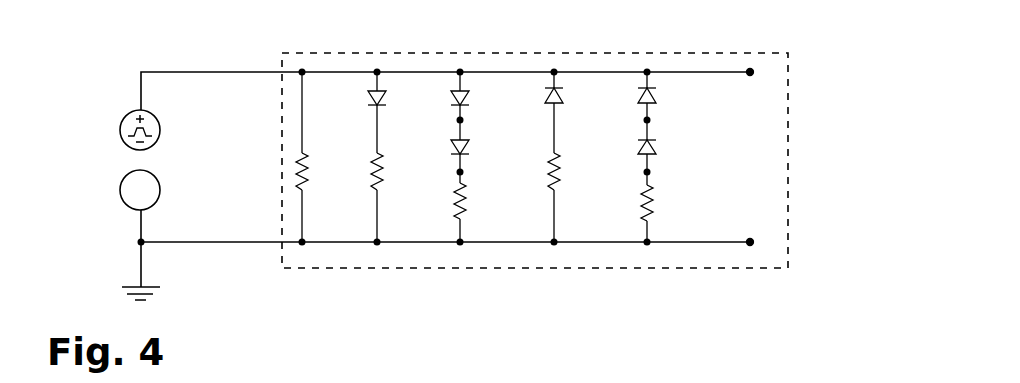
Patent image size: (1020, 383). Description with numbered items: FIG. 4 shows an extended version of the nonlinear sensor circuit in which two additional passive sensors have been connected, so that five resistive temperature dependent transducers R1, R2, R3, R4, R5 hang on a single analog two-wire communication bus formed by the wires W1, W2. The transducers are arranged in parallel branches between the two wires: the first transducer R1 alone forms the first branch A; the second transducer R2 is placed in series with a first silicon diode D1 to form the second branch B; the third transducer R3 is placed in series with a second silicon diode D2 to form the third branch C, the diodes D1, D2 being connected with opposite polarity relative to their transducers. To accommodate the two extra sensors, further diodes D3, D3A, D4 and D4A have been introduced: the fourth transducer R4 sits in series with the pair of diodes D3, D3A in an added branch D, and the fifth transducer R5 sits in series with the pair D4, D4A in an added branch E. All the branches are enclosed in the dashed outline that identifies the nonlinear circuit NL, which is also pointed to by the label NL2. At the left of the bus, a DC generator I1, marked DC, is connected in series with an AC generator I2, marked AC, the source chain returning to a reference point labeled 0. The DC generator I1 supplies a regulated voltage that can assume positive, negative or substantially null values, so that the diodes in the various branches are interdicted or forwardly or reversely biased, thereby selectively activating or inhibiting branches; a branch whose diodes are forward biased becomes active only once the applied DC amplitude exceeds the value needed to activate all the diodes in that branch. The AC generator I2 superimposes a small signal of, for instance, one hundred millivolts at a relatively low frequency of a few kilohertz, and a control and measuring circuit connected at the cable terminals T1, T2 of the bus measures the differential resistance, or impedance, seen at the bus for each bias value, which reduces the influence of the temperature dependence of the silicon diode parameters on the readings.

The analog two-wire bus wire W1 is at (445, 74).
The analog two-wire bus wire W2 is at (445, 248).
The DC generator I1 is at (146, 122).
The DC source label DC is at (179, 131).
The AC generator I2 is at (147, 199).
The AC source label AC is at (178, 190).
The ground 0 is at (146, 300).
The first resistance varying transducer R1 is at (321, 157).
The second resistance varying transducer R2 is at (396, 197).
The third resistance varying transducer R3 is at (572, 197).
The resistive sensor R4 is at (444, 212).
The resistive sensor R5 is at (632, 213).
The first silicon diode D1 is at (363, 112).
The second silicon diode D2 is at (539, 112).
The silicon diode D3 is at (444, 106).
The silicon diode D3A is at (483, 160).
The silicon diode D4 is at (632, 106).
The silicon diode D4A is at (672, 161).
The cable terminal T1 is at (750, 83).
The cable terminal T2 is at (750, 228).
The first branch A is at (312, 195).
The second branch B is at (385, 128).
The third branch C is at (562, 128).
The branch D is at (468, 166).
The branch E is at (662, 166).
The nonlinear circuit NL is at (790, 168).
The second non-linear load NL2 is at (810, 381).